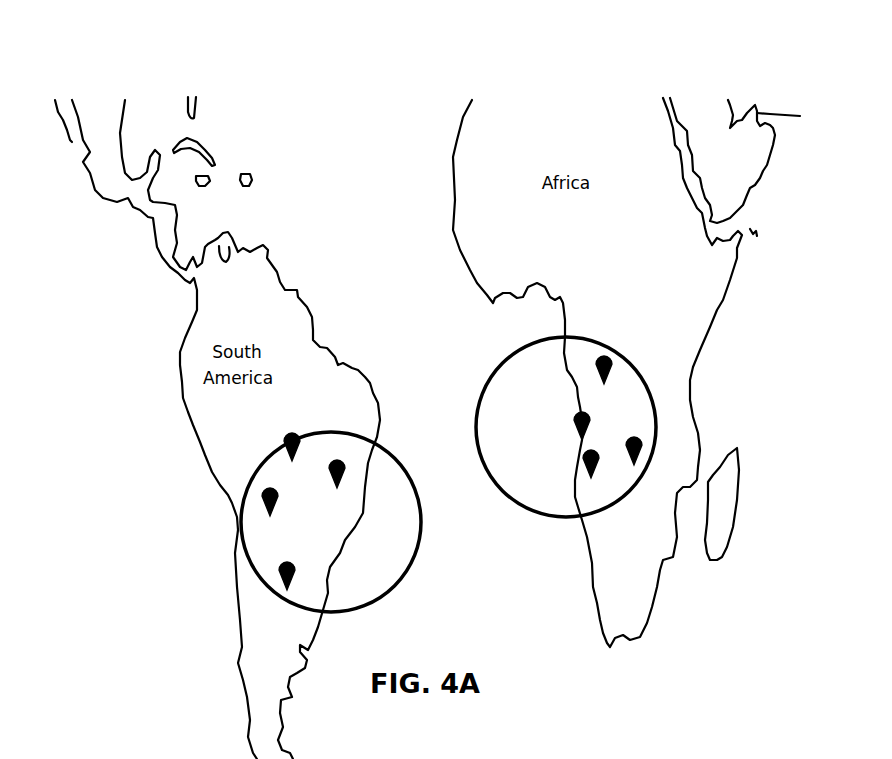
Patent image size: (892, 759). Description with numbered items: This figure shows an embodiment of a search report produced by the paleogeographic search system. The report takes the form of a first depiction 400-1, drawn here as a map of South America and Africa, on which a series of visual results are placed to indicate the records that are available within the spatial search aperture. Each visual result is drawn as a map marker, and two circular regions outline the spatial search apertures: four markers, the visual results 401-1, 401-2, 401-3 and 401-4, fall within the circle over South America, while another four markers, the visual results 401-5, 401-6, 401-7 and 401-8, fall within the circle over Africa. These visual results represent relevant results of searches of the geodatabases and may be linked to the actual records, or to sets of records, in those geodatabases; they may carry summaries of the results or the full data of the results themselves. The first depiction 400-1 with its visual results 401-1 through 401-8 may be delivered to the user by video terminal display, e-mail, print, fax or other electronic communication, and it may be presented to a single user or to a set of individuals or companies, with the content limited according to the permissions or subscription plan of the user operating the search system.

The first depiction 400-1 is at (320, 107).
The visual result 401-1 is at (270, 490).
The visual result 401-2 is at (293, 434).
The visual result 401-3 is at (335, 461).
The visual result 401-4 is at (289, 562).
The visual result 401-5 is at (612, 364).
The visual result 401-6 is at (590, 420).
The visual result 401-7 is at (642, 447).
The visual result 401-8 is at (598, 455).